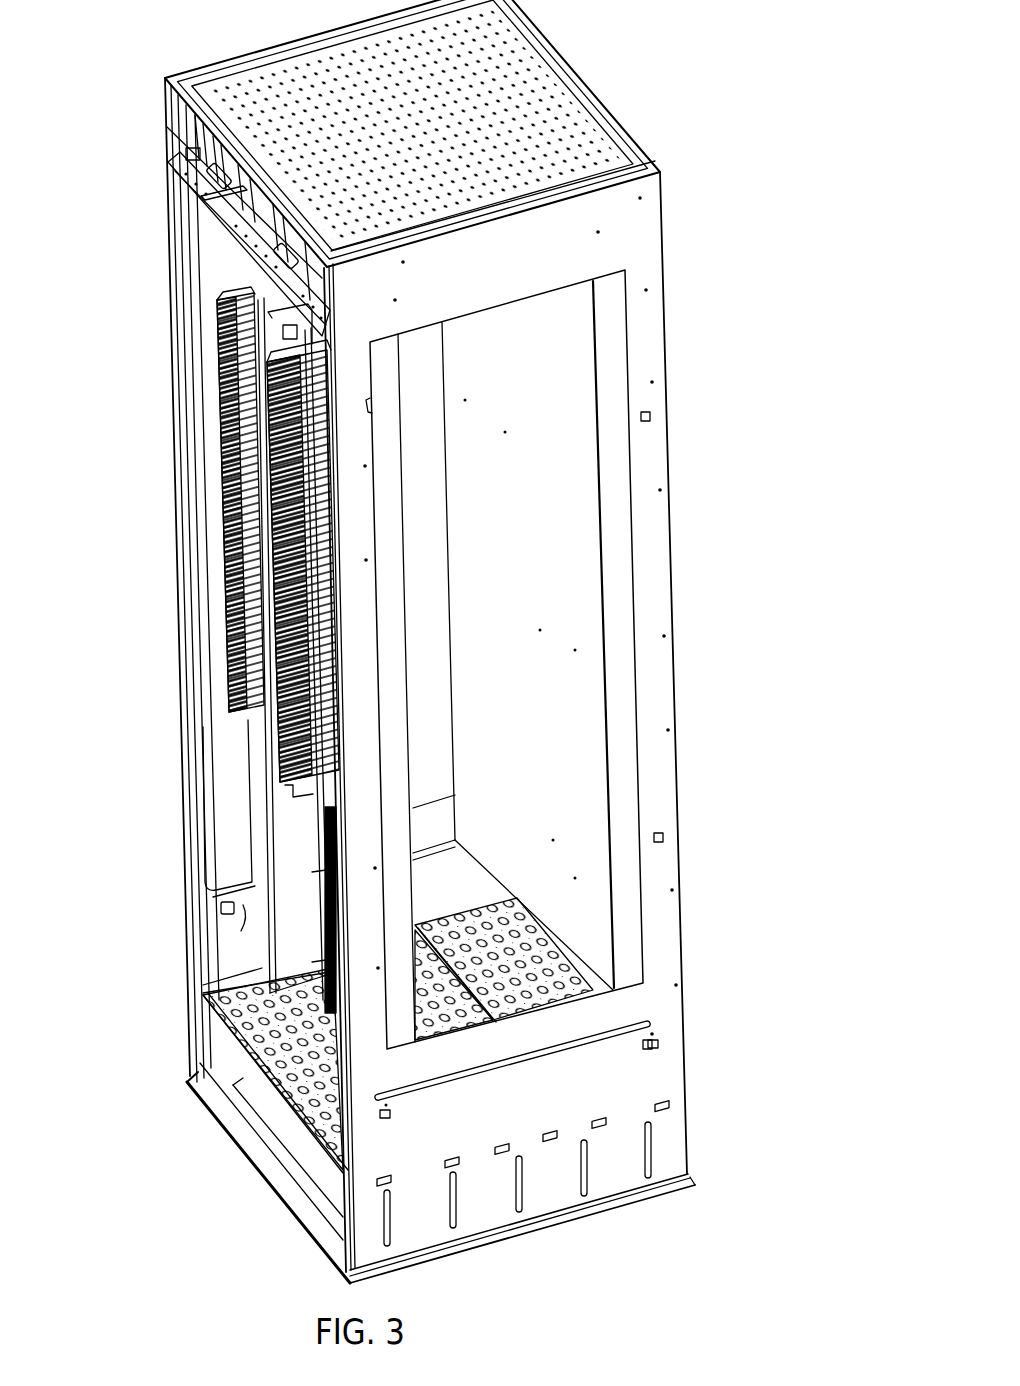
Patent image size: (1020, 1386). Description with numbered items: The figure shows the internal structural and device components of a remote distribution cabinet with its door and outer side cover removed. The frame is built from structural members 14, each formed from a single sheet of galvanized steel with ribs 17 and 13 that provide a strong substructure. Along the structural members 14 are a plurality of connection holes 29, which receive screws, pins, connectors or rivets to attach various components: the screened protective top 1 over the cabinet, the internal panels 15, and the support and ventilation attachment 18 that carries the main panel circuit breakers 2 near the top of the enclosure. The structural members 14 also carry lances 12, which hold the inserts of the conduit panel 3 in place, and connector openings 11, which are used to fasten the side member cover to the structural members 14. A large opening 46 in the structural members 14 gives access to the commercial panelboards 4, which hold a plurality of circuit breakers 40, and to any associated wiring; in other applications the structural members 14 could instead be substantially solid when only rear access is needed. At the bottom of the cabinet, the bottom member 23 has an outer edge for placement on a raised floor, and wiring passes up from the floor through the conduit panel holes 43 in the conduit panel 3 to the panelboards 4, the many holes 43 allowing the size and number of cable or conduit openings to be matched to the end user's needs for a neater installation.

The screened protective top 1 is at (605, 160).
The main panel circuit breakers 2 is at (195, 157).
The conduit panel 3 is at (243, 1037).
The commercial panelboards 4 is at (193, 650).
The connector openings 11 is at (395, 1113).
The lances 12 is at (660, 1108).
The rib 13 is at (660, 1150).
The structural members 14 is at (648, 228).
The internal panels 15 is at (573, 537).
The rib 17 is at (713, 998).
The support and ventilation attachment 18 is at (210, 208).
The bottom member 23 is at (288, 1176).
The connection holes 29 is at (398, 268).
The circuit breakers 40 is at (222, 684).
The conduit panel holes 43 is at (273, 1072).
The opening 46 is at (430, 466).